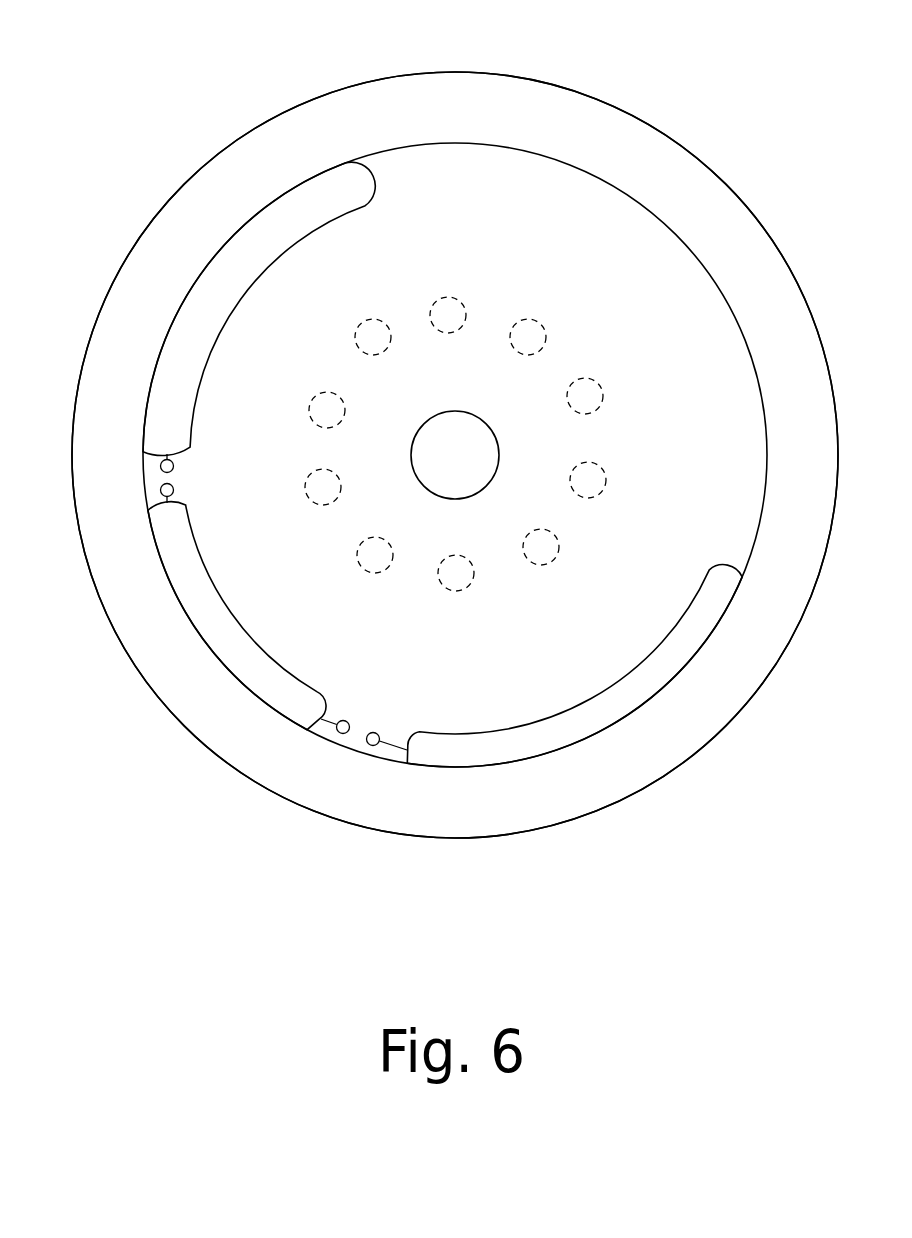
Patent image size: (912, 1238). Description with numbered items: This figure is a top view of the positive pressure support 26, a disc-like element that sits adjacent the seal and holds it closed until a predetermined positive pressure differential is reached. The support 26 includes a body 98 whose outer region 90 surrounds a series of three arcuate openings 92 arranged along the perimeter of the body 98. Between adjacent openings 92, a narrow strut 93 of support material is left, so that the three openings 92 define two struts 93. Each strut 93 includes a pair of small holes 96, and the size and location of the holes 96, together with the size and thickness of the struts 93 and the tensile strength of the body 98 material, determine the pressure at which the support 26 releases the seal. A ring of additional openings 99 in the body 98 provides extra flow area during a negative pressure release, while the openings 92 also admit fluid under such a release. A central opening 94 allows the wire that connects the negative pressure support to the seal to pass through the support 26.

The positive pressure support 26 is at (116, 94).
The annular outer ring 90 is at (145, 287).
The openings 92 is at (262, 247).
The strut 93 is at (155, 479).
The central opening 94 is at (442, 435).
The holes 96 is at (173, 465).
The body 98 is at (527, 240).
The additional openings 99 is at (600, 393).